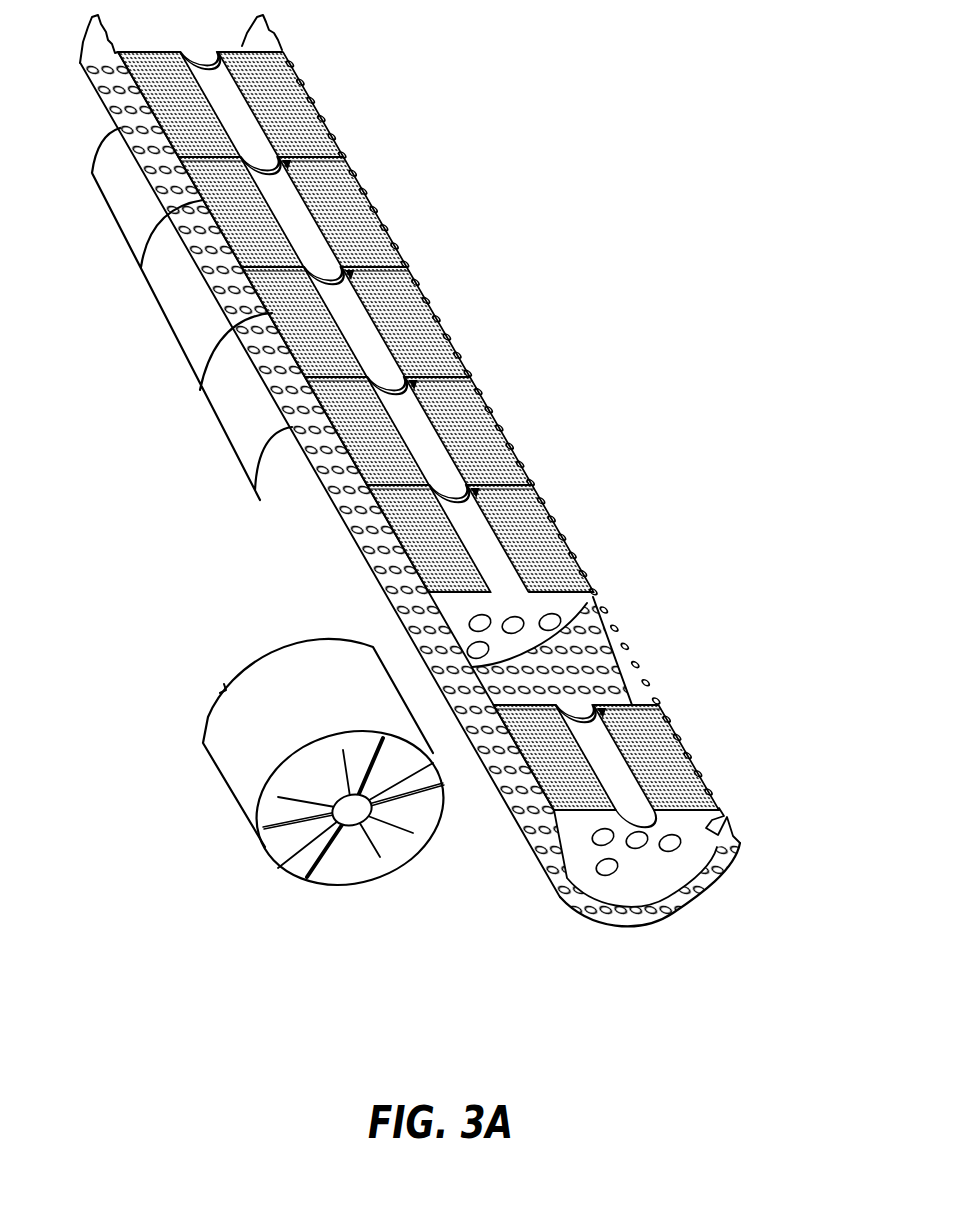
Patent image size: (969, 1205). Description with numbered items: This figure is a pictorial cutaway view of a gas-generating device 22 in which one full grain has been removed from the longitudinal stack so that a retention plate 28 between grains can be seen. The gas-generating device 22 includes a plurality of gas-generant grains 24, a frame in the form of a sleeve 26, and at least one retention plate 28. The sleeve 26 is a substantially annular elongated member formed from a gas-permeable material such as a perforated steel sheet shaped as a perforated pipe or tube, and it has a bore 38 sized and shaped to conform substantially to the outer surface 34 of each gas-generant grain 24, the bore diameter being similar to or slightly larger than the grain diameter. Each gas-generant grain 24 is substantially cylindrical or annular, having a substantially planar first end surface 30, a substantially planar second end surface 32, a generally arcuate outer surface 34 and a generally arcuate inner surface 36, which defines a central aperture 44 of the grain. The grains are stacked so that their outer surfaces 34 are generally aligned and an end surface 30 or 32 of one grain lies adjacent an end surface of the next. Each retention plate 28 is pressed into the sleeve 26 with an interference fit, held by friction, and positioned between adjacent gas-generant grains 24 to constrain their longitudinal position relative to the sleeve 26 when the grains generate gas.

The gas-generating device 22 is at (560, 77).
The gas-generant grain 24 is at (401, 492).
The sleeve 26 is at (698, 892).
The retention plate 28 is at (600, 693).
The first end surface 30 is at (300, 877).
The second end surface 32 is at (215, 700).
The outer surface 34 is at (235, 773).
The inner surface 36 is at (363, 810).
The bore 38 is at (728, 835).
The central aperture 44 is at (352, 838).